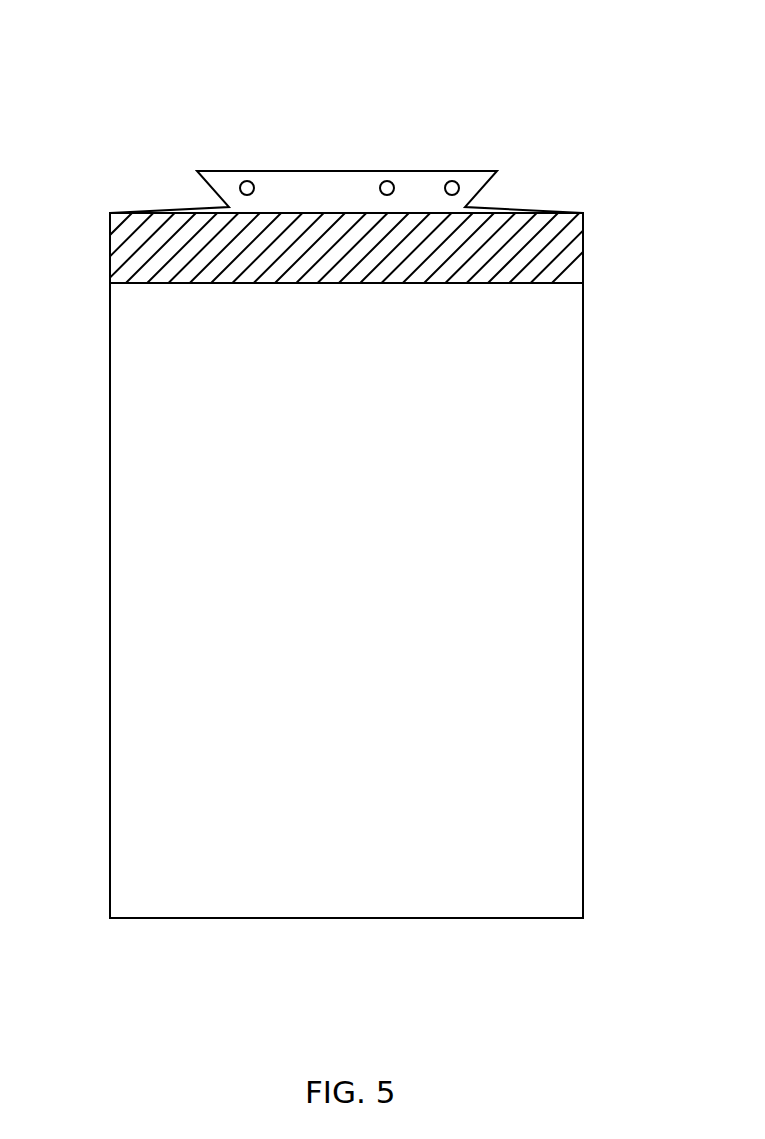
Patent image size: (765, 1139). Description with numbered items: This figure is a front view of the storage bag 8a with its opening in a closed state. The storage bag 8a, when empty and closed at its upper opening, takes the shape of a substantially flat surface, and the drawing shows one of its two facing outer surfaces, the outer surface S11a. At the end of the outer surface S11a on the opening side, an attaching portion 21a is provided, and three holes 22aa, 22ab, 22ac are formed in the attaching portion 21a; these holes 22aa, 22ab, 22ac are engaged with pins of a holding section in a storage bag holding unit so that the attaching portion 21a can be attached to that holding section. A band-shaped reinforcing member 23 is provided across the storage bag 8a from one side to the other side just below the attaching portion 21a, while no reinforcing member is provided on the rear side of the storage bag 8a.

The storage bag 8a is at (392, 58).
The attaching portion 21a is at (315, 170).
The hole 22aa is at (247, 181).
The hole 22ab is at (387, 181).
The hole 22ac is at (452, 181).
The reinforcing member 23 is at (523, 250).
The outer surface S11a is at (157, 588).